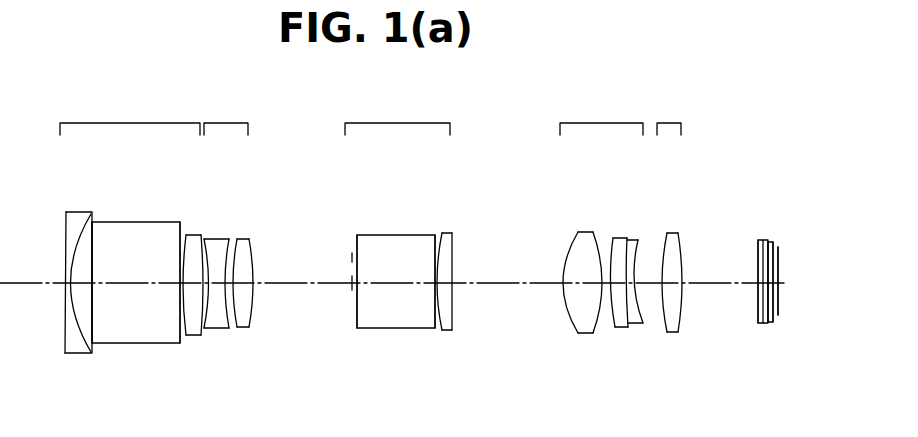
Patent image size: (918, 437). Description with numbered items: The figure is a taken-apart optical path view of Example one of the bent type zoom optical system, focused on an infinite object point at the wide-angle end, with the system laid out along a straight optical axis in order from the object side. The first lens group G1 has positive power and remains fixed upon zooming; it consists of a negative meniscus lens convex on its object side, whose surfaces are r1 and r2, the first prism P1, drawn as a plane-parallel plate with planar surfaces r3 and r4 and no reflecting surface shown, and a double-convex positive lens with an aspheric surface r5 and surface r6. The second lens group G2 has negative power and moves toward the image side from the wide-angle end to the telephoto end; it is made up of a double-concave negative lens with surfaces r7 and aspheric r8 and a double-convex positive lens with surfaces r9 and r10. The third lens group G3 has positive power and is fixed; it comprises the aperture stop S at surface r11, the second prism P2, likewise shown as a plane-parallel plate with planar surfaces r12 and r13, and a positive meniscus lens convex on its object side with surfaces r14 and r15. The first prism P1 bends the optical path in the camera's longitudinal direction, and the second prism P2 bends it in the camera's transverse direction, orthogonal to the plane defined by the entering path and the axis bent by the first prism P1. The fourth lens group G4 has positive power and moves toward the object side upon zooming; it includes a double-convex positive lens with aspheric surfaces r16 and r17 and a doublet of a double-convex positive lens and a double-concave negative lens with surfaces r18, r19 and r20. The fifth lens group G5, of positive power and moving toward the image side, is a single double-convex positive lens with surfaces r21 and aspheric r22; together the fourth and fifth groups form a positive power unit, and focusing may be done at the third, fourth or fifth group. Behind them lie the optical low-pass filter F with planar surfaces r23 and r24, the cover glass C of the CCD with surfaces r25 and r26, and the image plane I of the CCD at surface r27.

The first lens group G1 is at (130, 113).
The second lens group G2 is at (226, 113).
The third lens group G3 is at (397, 113).
The fourth lens group G4 is at (601, 113).
The fifth lens group G5 is at (669, 113).
The first prism P1 is at (150, 341).
The second prism P2 is at (400, 322).
The aperture stop S is at (352, 312).
The optical low-pass filter F is at (763, 325).
The cover glass C is at (775, 325).
The image plane I is at (783, 265).
The lens surface radius of curvature r1 is at (64, 243).
The lens surface radius of curvature r2 is at (77, 242).
The lens surface radius of curvature r3 is at (100, 243).
The lens surface radius of curvature r4 is at (172, 243).
The lens surface radius of curvature r5 is at (185, 240).
The lens surface radius of curvature r6 is at (200, 238).
The lens surface radius of curvature r7 is at (208, 240).
The lens surface radius of curvature r8 is at (226, 240).
The lens surface radius of curvature r9 is at (238, 240).
The lens surface radius of curvature r10 is at (252, 247).
The lens surface radius of curvature r11 is at (352, 250).
The lens surface radius of curvature r12 is at (358, 244).
The lens surface radius of curvature r13 is at (434, 243).
The lens surface radius of curvature r14 is at (446, 240).
The lens surface radius of curvature r15 is at (455, 250).
The lens surface radius of curvature r16 is at (567, 245).
The lens surface radius of curvature r17 is at (596, 235).
The lens surface radius of curvature r18 is at (612, 240).
The lens surface radius of curvature r19 is at (628, 242).
The lens surface radius of curvature r20 is at (637, 245).
The lens surface radius of curvature r21 is at (665, 240).
The lens surface radius of curvature r22 is at (683, 245).
The lens surface radius of curvature r23 is at (757, 242).
The lens surface radius of curvature r24 is at (760, 240).
The lens surface radius of curvature r25 is at (769, 242).
The lens surface radius of curvature r26 is at (775, 244).
The lens surface radius of curvature r27 is at (782, 248).